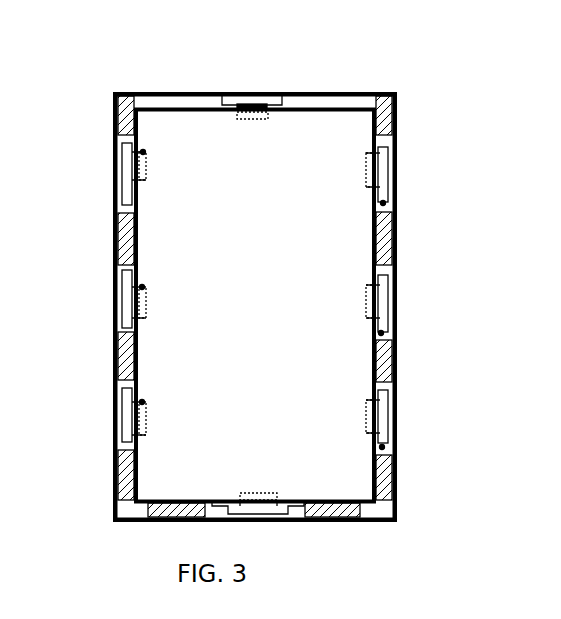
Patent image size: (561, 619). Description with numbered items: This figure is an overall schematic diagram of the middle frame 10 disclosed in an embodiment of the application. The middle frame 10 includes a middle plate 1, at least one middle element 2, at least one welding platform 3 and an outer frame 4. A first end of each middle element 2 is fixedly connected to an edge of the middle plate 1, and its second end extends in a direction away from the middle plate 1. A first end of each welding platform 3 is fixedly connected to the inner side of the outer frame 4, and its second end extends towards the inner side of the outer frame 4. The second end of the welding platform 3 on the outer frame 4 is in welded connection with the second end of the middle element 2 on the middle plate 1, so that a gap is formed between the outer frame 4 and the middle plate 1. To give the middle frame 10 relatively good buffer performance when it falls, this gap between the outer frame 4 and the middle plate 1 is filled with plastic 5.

The middle frame 10 is at (255, 40).
The middle plate 1 is at (330, 108).
The middle element 2 is at (142, 287).
The welding platform 3 is at (397, 355).
The outer frame 4 is at (395, 90).
The plastic 5 is at (114, 394).